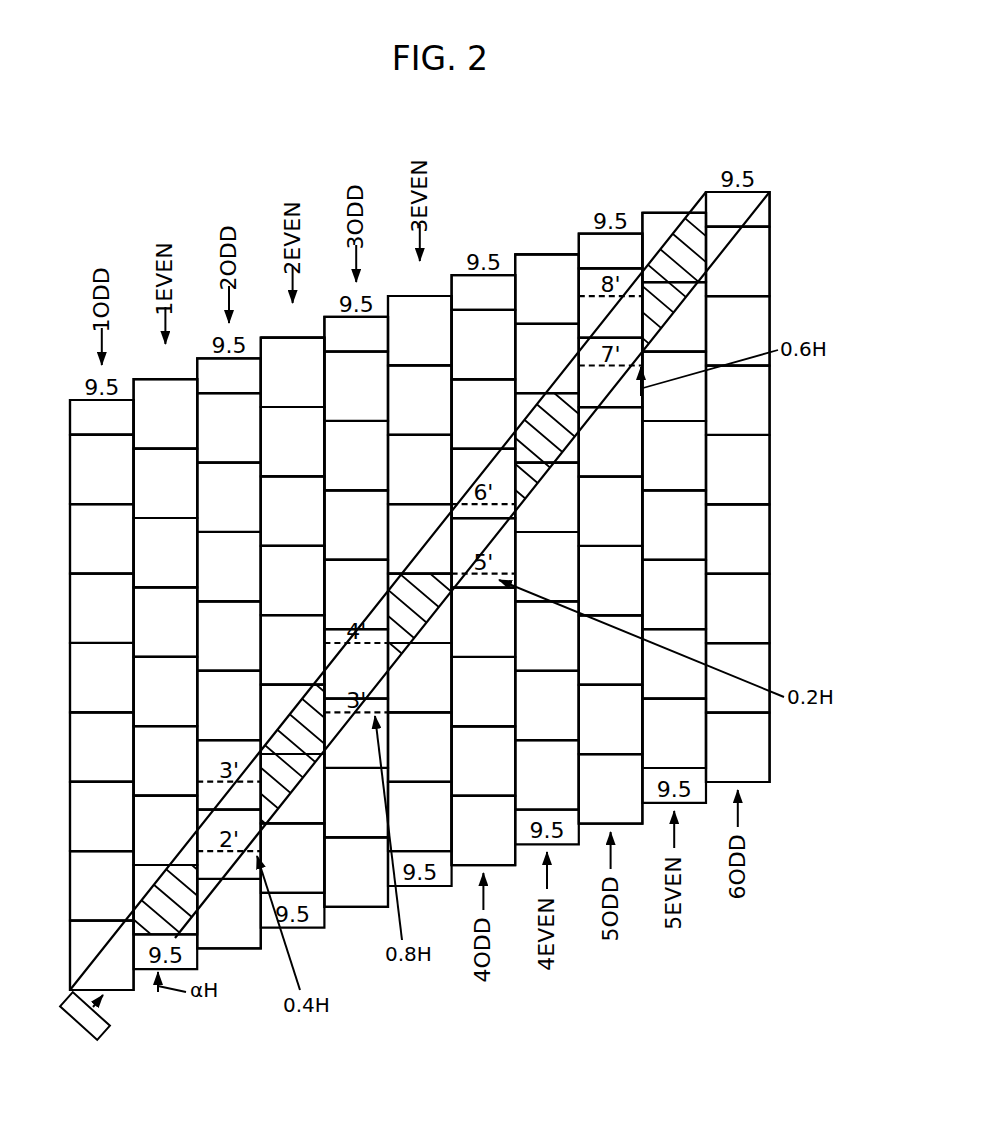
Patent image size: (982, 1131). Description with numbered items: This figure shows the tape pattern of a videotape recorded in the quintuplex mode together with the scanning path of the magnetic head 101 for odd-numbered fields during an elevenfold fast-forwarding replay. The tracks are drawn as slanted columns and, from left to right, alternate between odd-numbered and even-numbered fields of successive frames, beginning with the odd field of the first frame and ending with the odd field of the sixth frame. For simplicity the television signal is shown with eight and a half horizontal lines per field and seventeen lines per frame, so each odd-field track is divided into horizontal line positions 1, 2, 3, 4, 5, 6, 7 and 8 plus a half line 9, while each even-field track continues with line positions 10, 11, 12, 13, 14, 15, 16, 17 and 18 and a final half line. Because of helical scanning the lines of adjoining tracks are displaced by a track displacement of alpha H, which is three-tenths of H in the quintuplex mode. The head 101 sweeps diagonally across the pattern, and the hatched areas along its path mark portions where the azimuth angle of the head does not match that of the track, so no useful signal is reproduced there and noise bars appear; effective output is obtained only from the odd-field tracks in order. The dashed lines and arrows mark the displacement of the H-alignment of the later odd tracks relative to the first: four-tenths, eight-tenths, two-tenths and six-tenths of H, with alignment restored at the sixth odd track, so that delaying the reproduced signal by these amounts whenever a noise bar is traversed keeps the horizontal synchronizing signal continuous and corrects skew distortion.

The magnetic head 101 is at (108, 1030).
The nozzle 1 / raster line 1 is at (420, 852).
The switching unit 2 is at (420, 782).
The logic unit 3 is at (420, 713).
The skew detection unit 4 is at (420, 643).
The nozzle 5 is at (420, 574).
The nozzle 6 is at (420, 505).
The nozzle 7 is at (420, 435).
The nozzle 8 is at (420, 366).
The nozzle 9 is at (420, 313).
The nozzle 10 is at (420, 817).
The nozzle 11 is at (420, 747).
The nozzle 12 is at (420, 678).
The nozzle 13 is at (420, 608).
The nozzle 14 is at (420, 539).
The nozzle 15 is at (420, 470).
The nozzle 16 is at (420, 400).
The nozzle 17 is at (420, 331).
The nozzle 18 is at (420, 283).